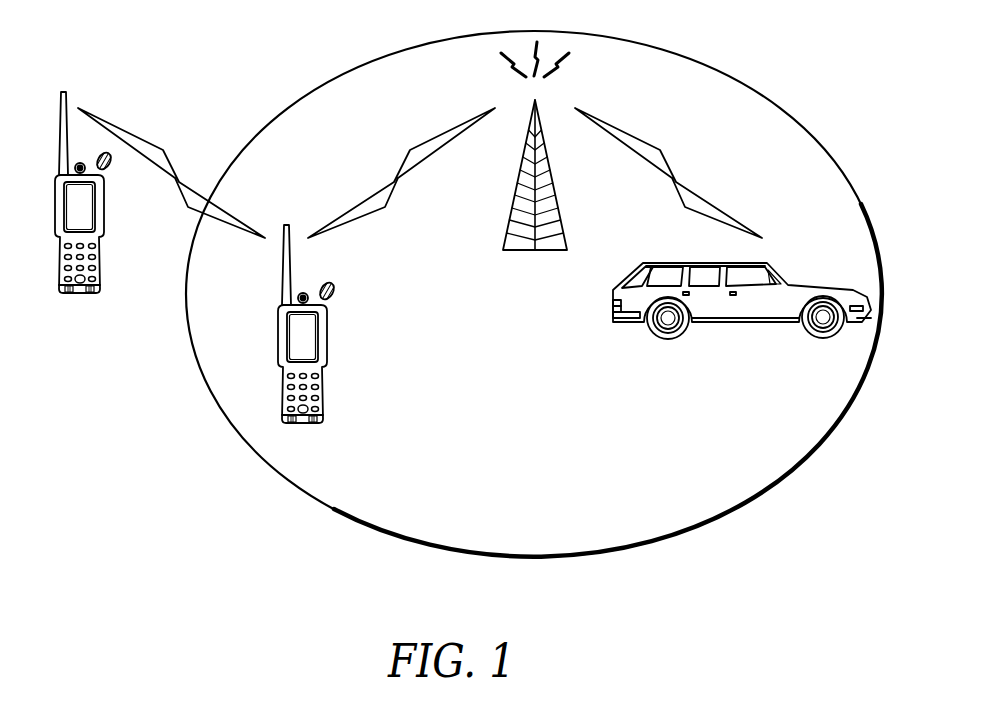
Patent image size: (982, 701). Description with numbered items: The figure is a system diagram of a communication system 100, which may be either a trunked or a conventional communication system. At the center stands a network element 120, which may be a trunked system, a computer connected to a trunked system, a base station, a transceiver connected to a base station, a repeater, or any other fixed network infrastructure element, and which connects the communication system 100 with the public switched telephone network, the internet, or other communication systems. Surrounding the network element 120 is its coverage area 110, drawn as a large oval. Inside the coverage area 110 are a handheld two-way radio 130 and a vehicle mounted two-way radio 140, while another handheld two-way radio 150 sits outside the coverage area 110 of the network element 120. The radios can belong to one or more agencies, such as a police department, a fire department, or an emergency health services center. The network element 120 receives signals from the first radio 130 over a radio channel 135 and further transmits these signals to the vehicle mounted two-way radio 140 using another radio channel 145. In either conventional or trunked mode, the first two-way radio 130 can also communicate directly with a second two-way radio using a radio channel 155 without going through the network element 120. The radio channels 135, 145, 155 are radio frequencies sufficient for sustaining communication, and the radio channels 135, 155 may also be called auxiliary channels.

The communication system 100 is at (731, 617).
The coverage area 110 is at (535, 565).
The network element 120 is at (552, 188).
The handheld two-way radio 130 is at (329, 343).
The radio channel 135 is at (389, 173).
The vehicle mounted two-way radio 140 is at (775, 270).
The radio channel 145 is at (694, 182).
The handheld two-way radio 150 is at (104, 206).
The radio channel 155 is at (178, 165).